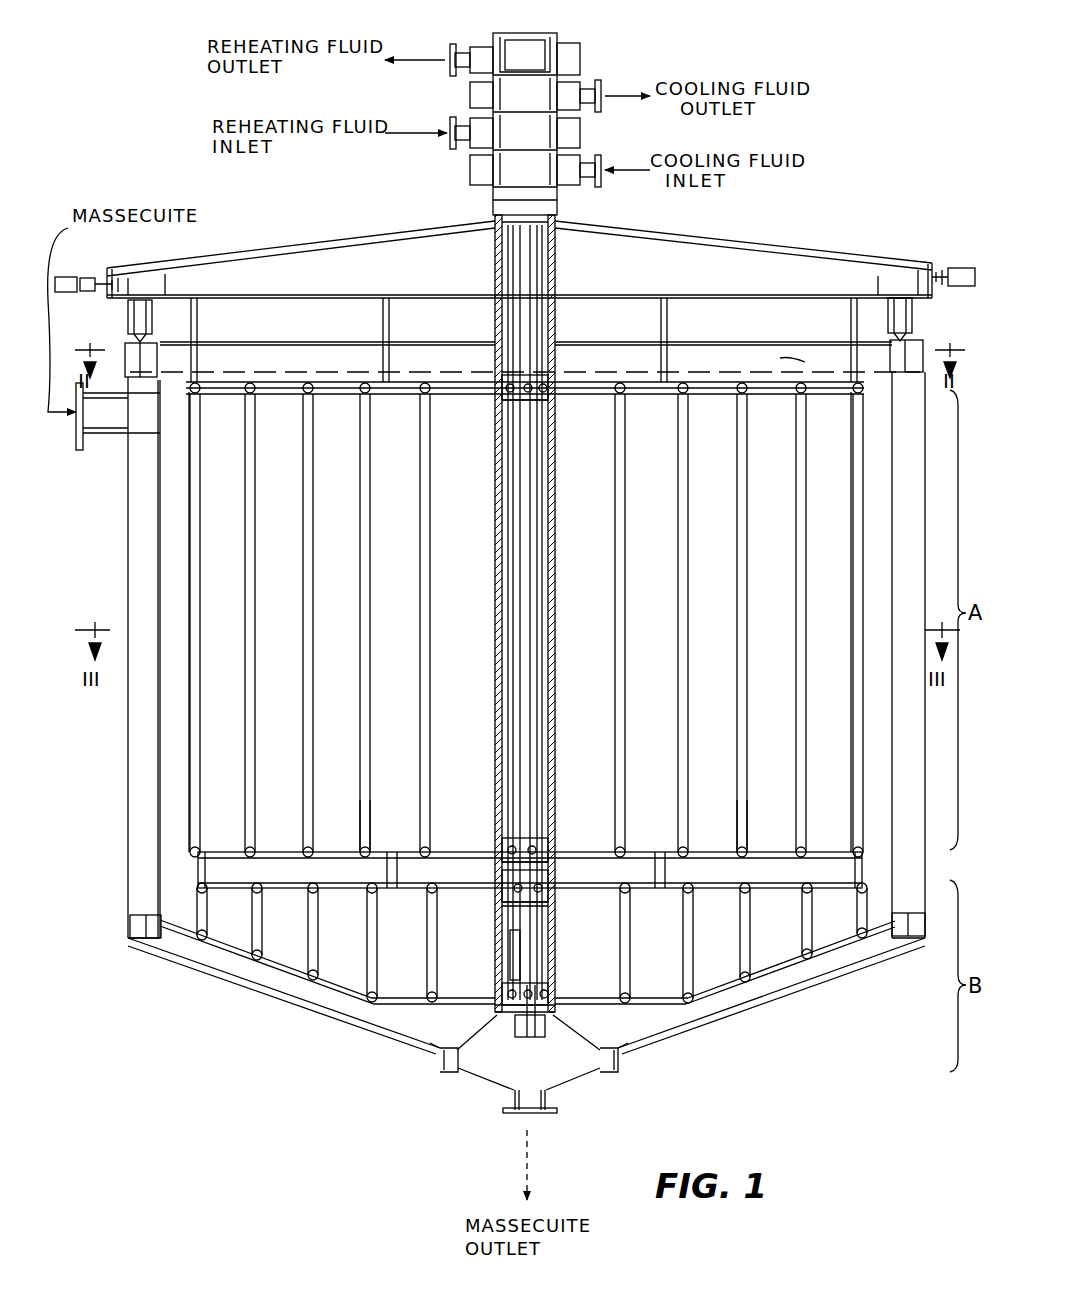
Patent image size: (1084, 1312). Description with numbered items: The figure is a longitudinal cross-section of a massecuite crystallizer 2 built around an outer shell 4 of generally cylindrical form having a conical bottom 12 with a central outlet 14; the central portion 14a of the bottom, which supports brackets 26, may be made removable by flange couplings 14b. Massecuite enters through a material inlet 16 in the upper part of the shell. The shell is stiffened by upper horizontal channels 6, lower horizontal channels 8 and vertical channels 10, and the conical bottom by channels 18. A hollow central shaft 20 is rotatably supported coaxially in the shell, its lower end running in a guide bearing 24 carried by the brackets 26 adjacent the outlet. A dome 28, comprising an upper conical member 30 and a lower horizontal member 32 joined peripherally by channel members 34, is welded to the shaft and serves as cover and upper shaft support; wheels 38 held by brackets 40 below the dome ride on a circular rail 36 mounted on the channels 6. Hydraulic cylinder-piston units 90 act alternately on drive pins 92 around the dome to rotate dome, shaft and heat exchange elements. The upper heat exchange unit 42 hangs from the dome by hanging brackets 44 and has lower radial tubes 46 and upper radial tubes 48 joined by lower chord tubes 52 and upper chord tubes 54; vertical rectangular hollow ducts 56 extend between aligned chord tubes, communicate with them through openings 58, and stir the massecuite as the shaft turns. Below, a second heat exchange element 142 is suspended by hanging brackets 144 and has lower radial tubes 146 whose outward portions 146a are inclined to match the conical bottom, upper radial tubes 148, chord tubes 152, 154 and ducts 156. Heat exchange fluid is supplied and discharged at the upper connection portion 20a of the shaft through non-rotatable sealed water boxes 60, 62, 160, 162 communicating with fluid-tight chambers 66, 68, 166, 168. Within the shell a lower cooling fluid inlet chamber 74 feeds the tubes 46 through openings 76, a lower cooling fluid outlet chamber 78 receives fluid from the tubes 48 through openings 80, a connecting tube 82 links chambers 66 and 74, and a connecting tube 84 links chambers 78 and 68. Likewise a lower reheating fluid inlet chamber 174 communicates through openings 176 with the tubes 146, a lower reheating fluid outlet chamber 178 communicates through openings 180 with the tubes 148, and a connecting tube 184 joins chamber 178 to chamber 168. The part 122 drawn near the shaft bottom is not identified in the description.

The massecuite crystallizer 2 is at (232, 222).
The outer shell 4 is at (128, 563).
The upper horizontal channels 6 is at (128, 352).
The lower horizontal channels 8 is at (128, 925).
The vertical channels 10 is at (128, 773).
The conical bottom 12 is at (306, 1003).
The central outlet 14 is at (502, 1082).
The central portion of conical bottom 14a is at (470, 1062).
The flange couplings 14b is at (440, 1062).
The material inlet 16 is at (112, 440).
The channels 18 is at (822, 976).
The central shaft 20 is at (550, 455).
The upper connection portion of central shaft 20a is at (462, 190).
The guide bearing 24 is at (556, 1027).
The brackets 26 is at (478, 1036).
The dome 28 is at (697, 262).
The upper conical member 30 is at (780, 243).
The lower substantially horizontal member 32 is at (756, 291).
The channel members 34 is at (878, 272).
The circular rail 36 is at (135, 340).
The wheels 38 is at (906, 332).
The brackets 40 is at (912, 300).
The heat exchange unit 42 is at (880, 480).
The hanging brackets 44 is at (192, 330).
The lower radial tubes 46 is at (362, 848).
The upper radial tubes 48 is at (353, 400).
The lower chord tubes 52 is at (304, 848).
The upper chord tubes 54 is at (415, 398).
The vertical rectangular hollow duct 56 is at (303, 740).
The openings 58 is at (782, 348).
The sealed water box 60 is at (584, 166).
The sealed water box 62 is at (577, 94).
The upper cooling fluid inlet chamber 66 is at (535, 180).
The upper cooling fluid outlet chamber 68 is at (505, 100).
The lower cooling fluid inlet chamber 74 is at (548, 826).
The openings 76 is at (496, 832).
The lower cooling fluid outlet chamber 78 is at (548, 368).
The openings 80 is at (546, 404).
The connecting tube 82 is at (515, 455).
The connecting tube 84 is at (553, 270).
The hydraulic cylinder-piston units 90 is at (70, 278).
The drive pins 92 is at (100, 287).
The shaft bottom stub 122 is at (540, 990).
The second heat exchange element 142 is at (350, 1005).
The hanging brackets 144 is at (208, 872).
The lower radial tubes 146 is at (660, 1004).
The radially outward portion 146a is at (772, 985).
The upper radial tubes 148 is at (360, 892).
The lower chord tubes 152 is at (378, 992).
The upper chord tubes 154 is at (436, 900).
The vertical rectangular hollow ducts 156 is at (206, 905).
The sealed water box 160 is at (470, 158).
The sealed water box 162 is at (470, 84).
The upper reheating fluid inlet chamber 166 is at (562, 138).
The upper reheating fluid outlet chamber 168 is at (528, 50).
The lower reheating fluid inlet chamber 174 is at (535, 982).
The openings 176 is at (550, 990).
The lower reheating fluid outlet chamber 178 is at (502, 876).
The openings 180 is at (548, 914).
The connecting tube 184 is at (548, 672).